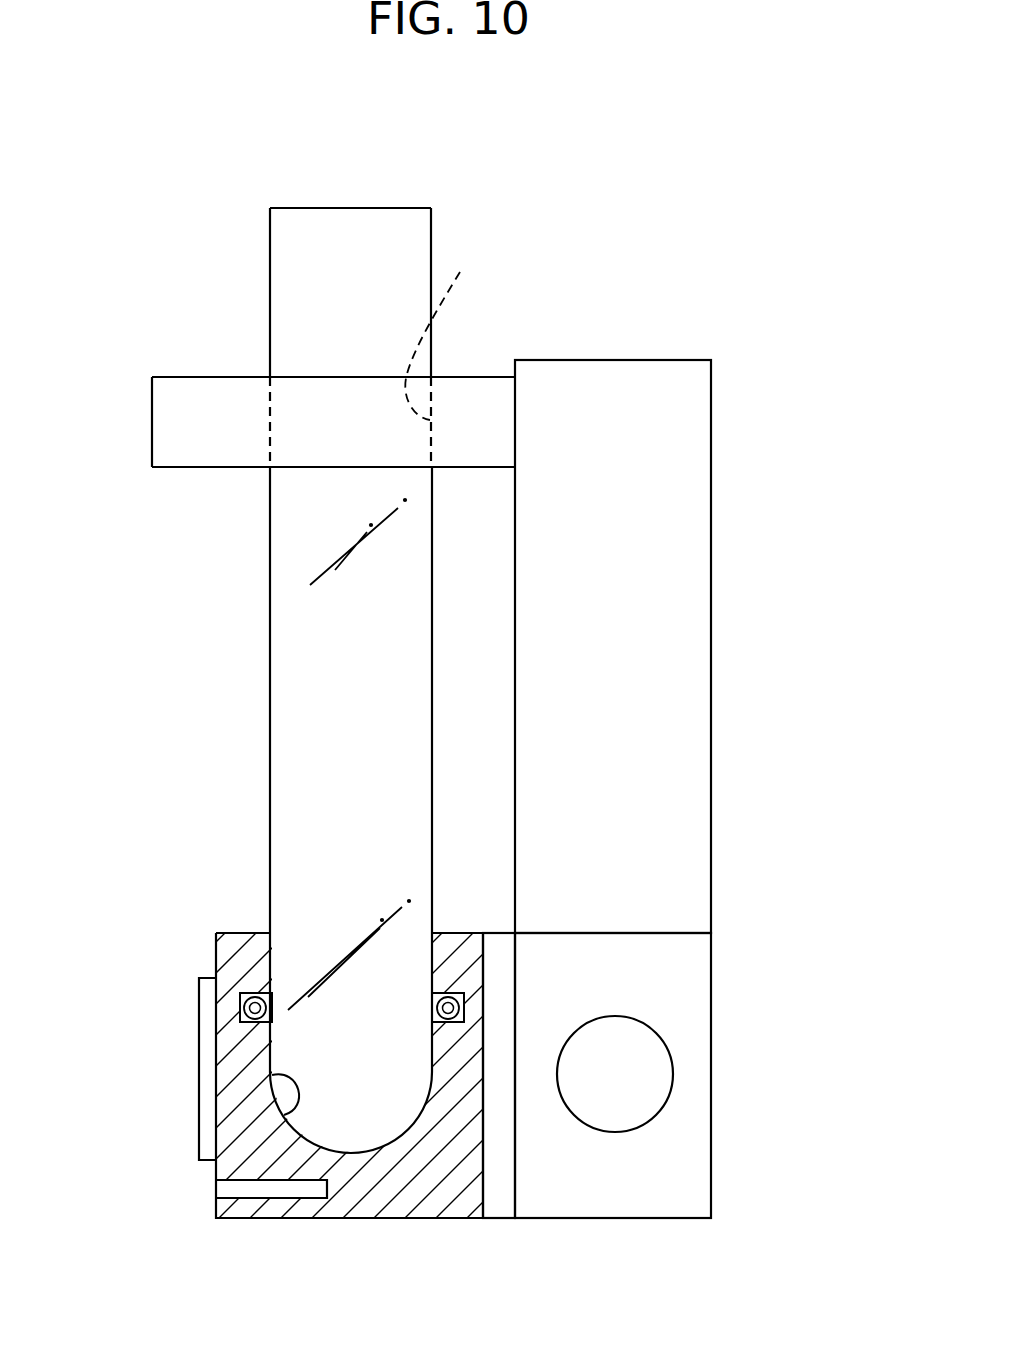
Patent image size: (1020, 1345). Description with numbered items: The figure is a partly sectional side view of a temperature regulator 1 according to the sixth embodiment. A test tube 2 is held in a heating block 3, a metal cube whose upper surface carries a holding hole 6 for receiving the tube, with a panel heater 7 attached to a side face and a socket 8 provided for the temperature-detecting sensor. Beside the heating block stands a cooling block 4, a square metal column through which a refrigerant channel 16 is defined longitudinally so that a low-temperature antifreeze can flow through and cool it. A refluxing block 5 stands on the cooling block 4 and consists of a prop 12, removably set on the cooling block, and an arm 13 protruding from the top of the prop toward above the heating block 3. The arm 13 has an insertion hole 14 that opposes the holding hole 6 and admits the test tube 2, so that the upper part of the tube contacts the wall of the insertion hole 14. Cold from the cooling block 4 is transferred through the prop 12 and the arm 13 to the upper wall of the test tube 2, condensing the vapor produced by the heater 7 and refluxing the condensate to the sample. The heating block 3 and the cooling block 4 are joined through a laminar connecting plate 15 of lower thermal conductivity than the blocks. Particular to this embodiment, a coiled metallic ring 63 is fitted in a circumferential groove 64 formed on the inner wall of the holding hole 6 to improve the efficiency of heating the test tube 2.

The temperature regulator 1 is at (473, 168).
The test tube 2 is at (293, 723).
The heating block 3 is at (391, 1059).
The cooling block 4 is at (660, 1075).
The refluxing block 5 is at (648, 819).
The holding hole 6 is at (283, 1113).
The panel heater 7 is at (208, 1033).
The socket 8 is at (288, 1197).
The prop 12 is at (698, 610).
The arm 13 is at (190, 393).
The insertion hole 14 is at (447, 325).
The connecting plate 15 is at (498, 1197).
The refrigerant channel 16 is at (635, 1022).
The metallic ring 63 is at (447, 998).
The circumferential groove 64 is at (275, 1000).